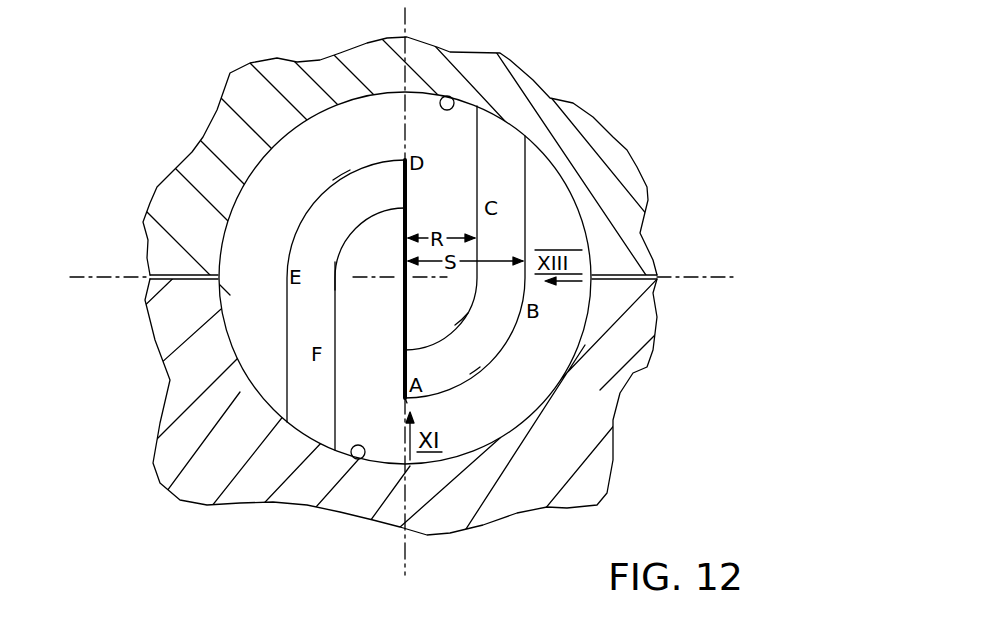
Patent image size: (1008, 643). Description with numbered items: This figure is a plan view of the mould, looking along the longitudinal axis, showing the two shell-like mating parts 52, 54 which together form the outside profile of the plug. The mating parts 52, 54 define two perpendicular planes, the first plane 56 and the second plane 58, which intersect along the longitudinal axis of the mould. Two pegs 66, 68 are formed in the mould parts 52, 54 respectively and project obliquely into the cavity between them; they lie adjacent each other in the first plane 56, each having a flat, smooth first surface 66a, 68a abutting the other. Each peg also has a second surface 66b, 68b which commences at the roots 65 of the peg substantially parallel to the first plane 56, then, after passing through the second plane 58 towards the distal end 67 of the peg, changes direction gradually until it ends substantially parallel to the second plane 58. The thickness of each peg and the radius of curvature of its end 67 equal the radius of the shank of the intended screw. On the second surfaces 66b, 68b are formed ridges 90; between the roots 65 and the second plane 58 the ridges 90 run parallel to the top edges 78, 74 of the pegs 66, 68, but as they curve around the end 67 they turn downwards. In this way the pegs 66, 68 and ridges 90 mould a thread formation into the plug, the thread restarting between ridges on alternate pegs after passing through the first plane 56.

The mating part 52 is at (190, 152).
The mating part 54 is at (203, 363).
The first plane 56 is at (407, 548).
The second plane 58 is at (705, 278).
The roots 65 is at (443, 102).
The peg 66 is at (525, 180).
The first surface 66a is at (407, 108).
The second surface 66b is at (468, 313).
The distal end 67 is at (378, 210).
The peg 68 is at (290, 320).
The first surface 68a is at (407, 403).
The second surface 68b is at (335, 262).
The top edge 74 is at (392, 338).
The top edge 78 is at (464, 212).
The ridges 90 is at (300, 377).